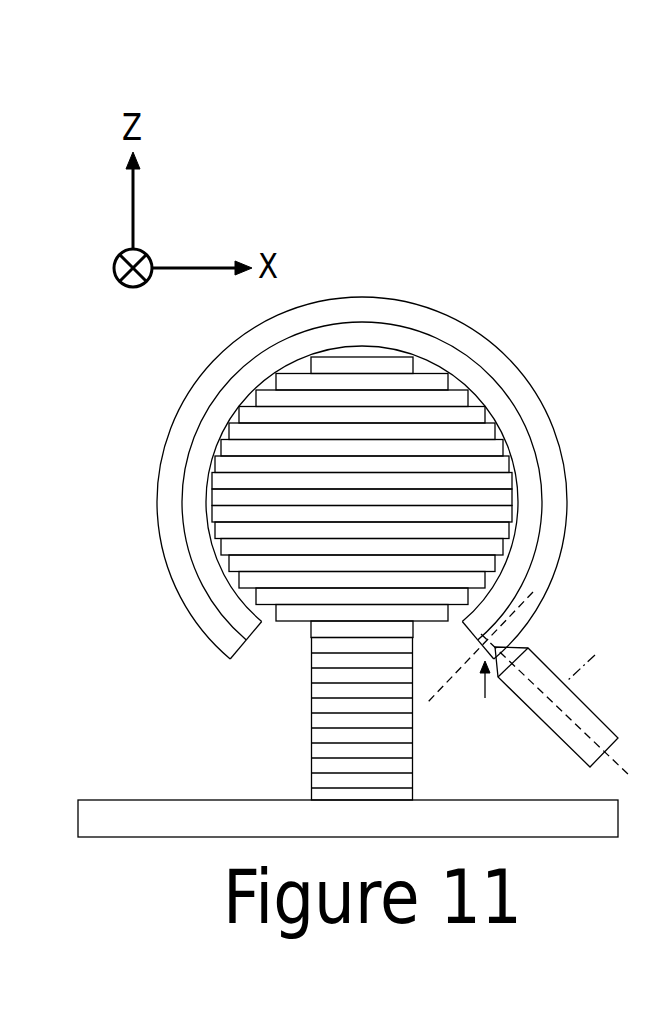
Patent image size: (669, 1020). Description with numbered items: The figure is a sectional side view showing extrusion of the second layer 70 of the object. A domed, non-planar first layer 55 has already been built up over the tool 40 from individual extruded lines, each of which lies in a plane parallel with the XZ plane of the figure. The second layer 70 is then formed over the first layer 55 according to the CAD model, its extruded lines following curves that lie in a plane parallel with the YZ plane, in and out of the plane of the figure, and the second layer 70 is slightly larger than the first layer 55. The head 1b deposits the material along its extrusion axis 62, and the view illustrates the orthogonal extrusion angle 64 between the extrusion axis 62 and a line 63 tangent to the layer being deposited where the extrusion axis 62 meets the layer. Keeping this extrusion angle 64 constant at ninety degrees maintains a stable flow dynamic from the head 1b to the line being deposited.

The second layer 70 is at (515, 375).
The first layer 55 is at (522, 535).
The tool 40 is at (488, 465).
The extrusion axis 62 is at (582, 730).
The tangent line 63 is at (438, 692).
The extrusion angle 64 is at (484, 697).
The head 1b is at (597, 651).